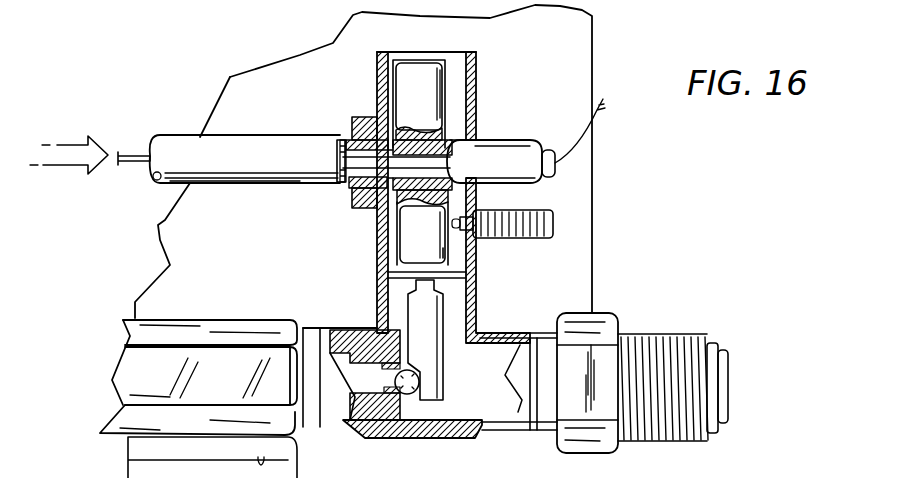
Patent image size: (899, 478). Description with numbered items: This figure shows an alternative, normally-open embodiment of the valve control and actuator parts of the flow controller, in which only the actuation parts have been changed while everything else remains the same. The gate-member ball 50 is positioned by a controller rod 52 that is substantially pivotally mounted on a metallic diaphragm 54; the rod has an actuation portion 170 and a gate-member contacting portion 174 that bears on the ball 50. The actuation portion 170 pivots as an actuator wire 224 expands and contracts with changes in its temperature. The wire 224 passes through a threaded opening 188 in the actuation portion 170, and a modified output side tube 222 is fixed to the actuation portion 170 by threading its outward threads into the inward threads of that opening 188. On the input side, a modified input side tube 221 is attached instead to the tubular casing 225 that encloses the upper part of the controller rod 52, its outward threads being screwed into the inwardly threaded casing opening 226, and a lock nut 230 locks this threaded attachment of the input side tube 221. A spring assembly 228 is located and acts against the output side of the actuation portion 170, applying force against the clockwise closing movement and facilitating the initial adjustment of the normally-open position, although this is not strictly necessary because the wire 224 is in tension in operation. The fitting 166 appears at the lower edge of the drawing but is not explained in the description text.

The input side tube 221 is at (190, 143).
The lock nut 230 is at (358, 117).
The actuator wire 224 is at (343, 163).
The tubular casing 225 is at (377, 225).
The threaded opening 188 is at (415, 127).
The actuation portion 170 is at (440, 105).
The output side tube 222 is at (527, 147).
The casing opening 226 is at (363, 181).
The spring assembly 228 is at (553, 205).
The controller rod 52 is at (447, 253).
The metallic diaphragm 54 is at (473, 278).
The gate-member contacting portion 174 is at (443, 366).
The gate-member ball 50 is at (407, 394).
The fitting nut 166 is at (703, 395).